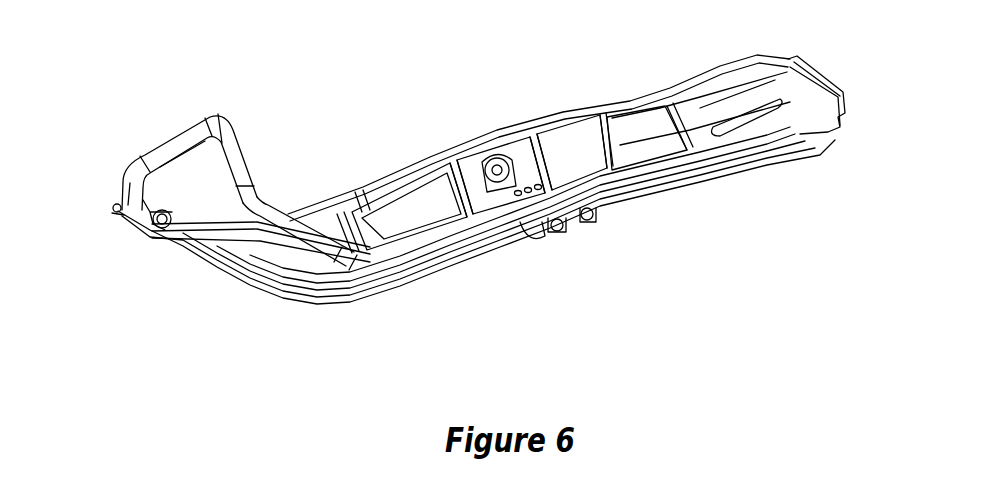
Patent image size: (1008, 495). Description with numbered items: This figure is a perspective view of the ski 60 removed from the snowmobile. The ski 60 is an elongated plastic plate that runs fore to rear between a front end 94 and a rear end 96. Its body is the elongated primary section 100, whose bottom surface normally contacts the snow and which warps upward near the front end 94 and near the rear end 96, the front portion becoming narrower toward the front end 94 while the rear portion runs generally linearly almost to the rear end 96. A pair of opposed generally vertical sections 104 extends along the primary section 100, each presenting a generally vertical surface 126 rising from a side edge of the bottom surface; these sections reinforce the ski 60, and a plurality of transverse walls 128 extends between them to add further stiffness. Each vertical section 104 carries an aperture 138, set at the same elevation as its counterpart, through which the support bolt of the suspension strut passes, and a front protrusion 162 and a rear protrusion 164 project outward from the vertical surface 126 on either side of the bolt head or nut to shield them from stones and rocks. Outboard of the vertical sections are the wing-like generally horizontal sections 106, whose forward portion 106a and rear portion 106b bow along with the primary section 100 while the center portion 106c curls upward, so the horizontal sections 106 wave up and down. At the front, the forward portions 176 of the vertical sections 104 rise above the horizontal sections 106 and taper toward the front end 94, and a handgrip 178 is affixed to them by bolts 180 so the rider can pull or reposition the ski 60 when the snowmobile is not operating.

The ski 60 is at (457, 112).
The front end 94 is at (113, 209).
The rear end 96 is at (807, 67).
The primary section 100 is at (413, 227).
The generally vertical sections 104 is at (388, 207).
The generally horizontal sections 106 is at (587, 113).
The forward portion 106a is at (193, 232).
The rear portion 106b is at (727, 77).
The center portion 106c is at (497, 140).
The generally vertical surface 126 is at (457, 262).
The transverse walls 128 is at (367, 242).
The apertures 138 is at (500, 166).
The front protrusion 162 is at (532, 227).
The rear protrusion 164 is at (590, 222).
The forward portions 176 is at (257, 237).
The handgrip 178 is at (223, 132).
The bolts 180 is at (160, 230).